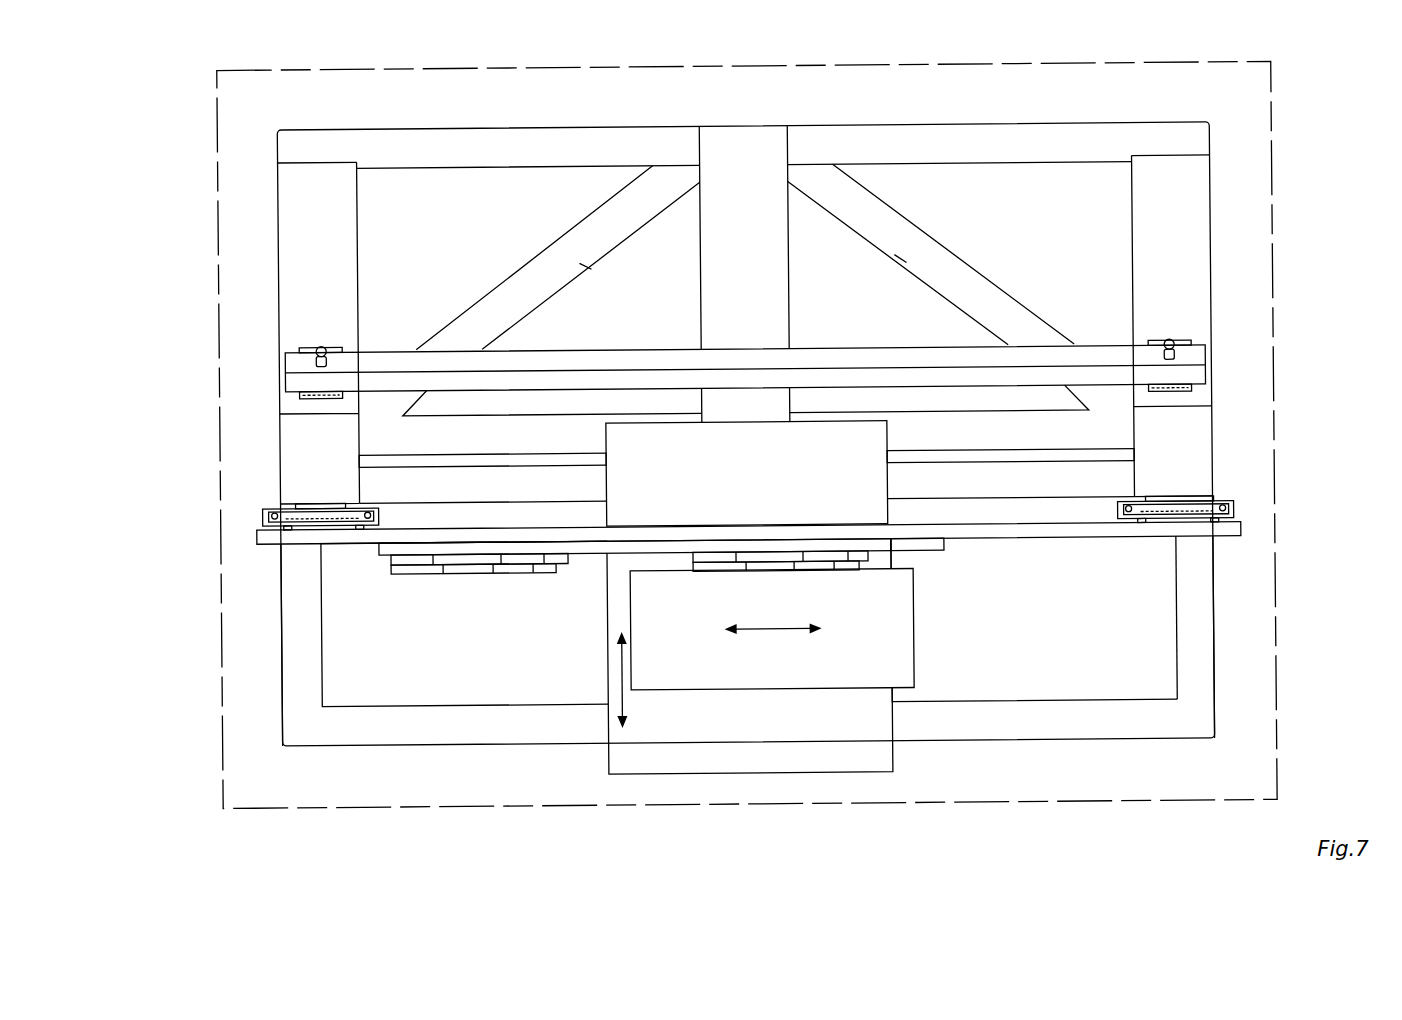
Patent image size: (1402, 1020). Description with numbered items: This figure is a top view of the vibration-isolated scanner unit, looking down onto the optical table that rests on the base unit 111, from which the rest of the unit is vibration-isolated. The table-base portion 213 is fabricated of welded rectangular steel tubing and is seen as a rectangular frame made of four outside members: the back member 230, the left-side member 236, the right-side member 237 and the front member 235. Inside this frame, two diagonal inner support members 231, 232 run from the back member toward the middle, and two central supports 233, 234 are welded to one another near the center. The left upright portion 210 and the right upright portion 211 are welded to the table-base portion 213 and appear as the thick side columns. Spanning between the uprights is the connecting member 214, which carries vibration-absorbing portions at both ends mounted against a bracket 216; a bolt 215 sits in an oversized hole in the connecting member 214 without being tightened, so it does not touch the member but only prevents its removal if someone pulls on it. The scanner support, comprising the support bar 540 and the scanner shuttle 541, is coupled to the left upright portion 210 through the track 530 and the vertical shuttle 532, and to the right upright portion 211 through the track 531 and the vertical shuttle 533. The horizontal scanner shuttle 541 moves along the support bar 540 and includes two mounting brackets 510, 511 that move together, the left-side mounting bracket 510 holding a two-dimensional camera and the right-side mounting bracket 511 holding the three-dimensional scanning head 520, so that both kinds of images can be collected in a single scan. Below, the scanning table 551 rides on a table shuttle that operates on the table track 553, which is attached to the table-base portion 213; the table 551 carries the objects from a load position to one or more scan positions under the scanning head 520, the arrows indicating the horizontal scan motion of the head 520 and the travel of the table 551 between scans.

The base unit 111 is at (178, 621).
The left upright portion 210 is at (357, 258).
The right upright portion 211 is at (1132, 232).
The table-base portion 213 is at (1006, 125).
The connecting member 214 is at (662, 347).
The bolt 215 is at (323, 344).
The bracket 216 is at (343, 347).
The back member 230 is at (548, 162).
The diagonal inner support member 231 is at (587, 265).
The diagonal inner support member 232 is at (902, 262).
The central support 233 is at (1057, 432).
The central support 234 is at (1087, 480).
The front member 235 is at (1042, 705).
The left-side member 236 is at (312, 621).
The right-side member 237 is at (1187, 596).
The left-side mounting bracket 510 is at (507, 575).
The right-side mounting bracket 511 is at (723, 567).
The scanning head 520 is at (732, 683).
The track 530 is at (313, 510).
The track 531 is at (1183, 503).
The vertical shuttle 532 is at (265, 515).
The vertical shuttle 533 is at (1233, 512).
The support bar 540 is at (1110, 538).
The scanner shuttle 541 is at (932, 557).
The scanning table 551 is at (712, 770).
The table track 553 is at (783, 306).